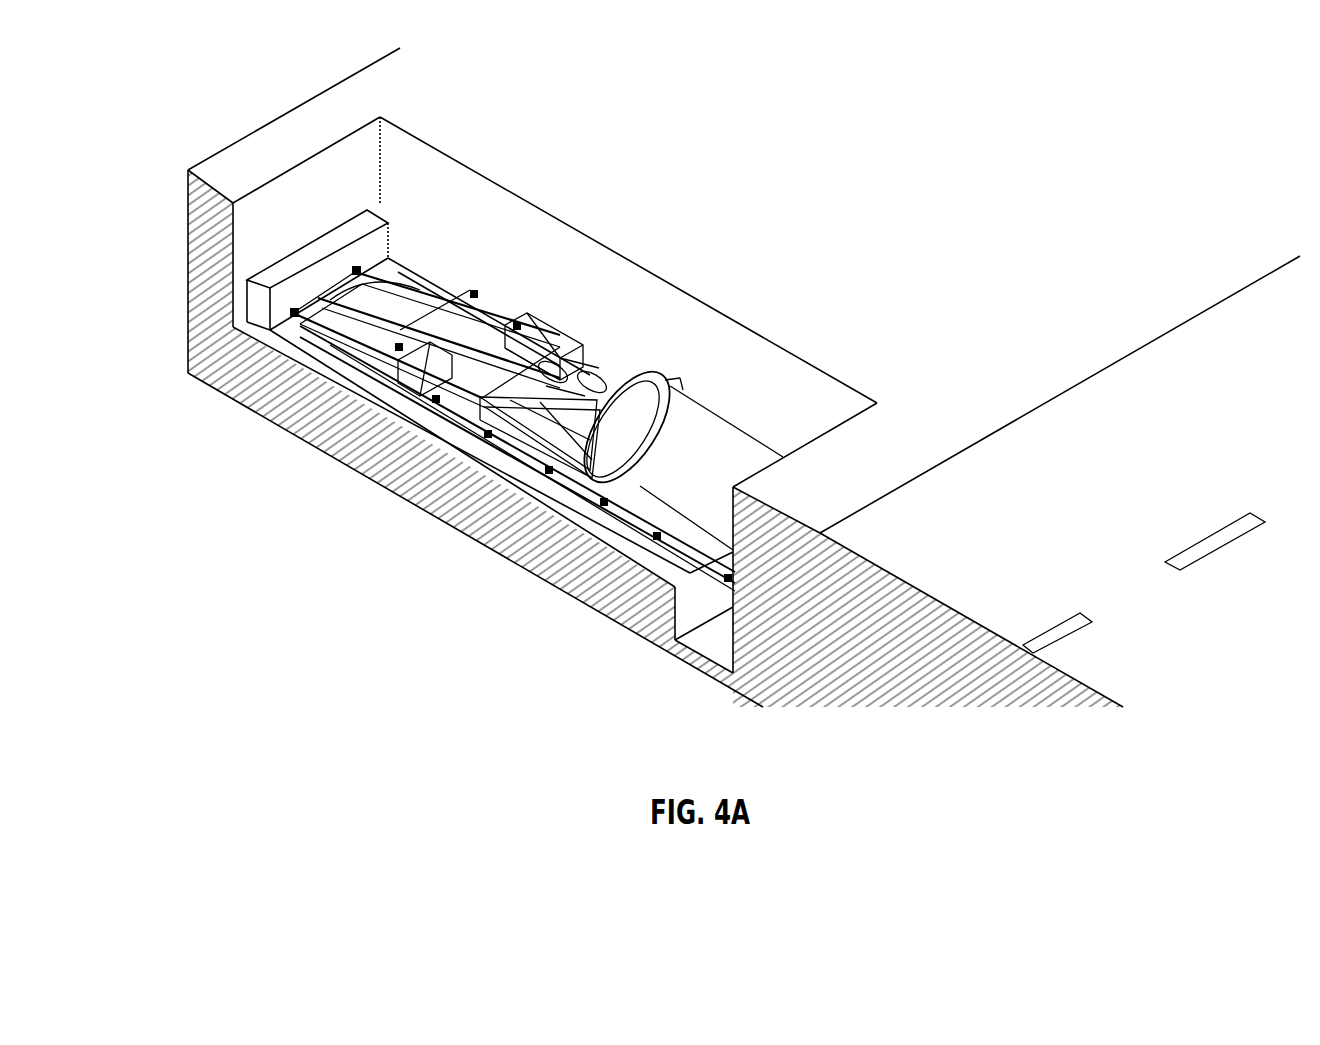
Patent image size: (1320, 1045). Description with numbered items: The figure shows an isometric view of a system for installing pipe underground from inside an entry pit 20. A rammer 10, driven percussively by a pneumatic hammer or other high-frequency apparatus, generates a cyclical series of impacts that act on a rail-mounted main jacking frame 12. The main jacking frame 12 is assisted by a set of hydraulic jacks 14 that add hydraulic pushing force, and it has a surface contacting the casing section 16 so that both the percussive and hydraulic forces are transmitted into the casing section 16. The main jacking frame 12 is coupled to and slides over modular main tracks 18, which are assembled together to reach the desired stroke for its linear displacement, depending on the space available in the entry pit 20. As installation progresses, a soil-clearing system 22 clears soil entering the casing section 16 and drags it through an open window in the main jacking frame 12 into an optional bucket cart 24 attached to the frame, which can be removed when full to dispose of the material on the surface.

The rammer 10 is at (587, 380).
The main jacking frame 12 is at (660, 375).
The hydraulic jacks 14 is at (542, 448).
The casing section 16 is at (710, 447).
The modular main tracks 18 is at (347, 345).
The entry pit 20 is at (338, 170).
The soil-clearing system 22 is at (410, 380).
The bucket cart 24 is at (527, 340).